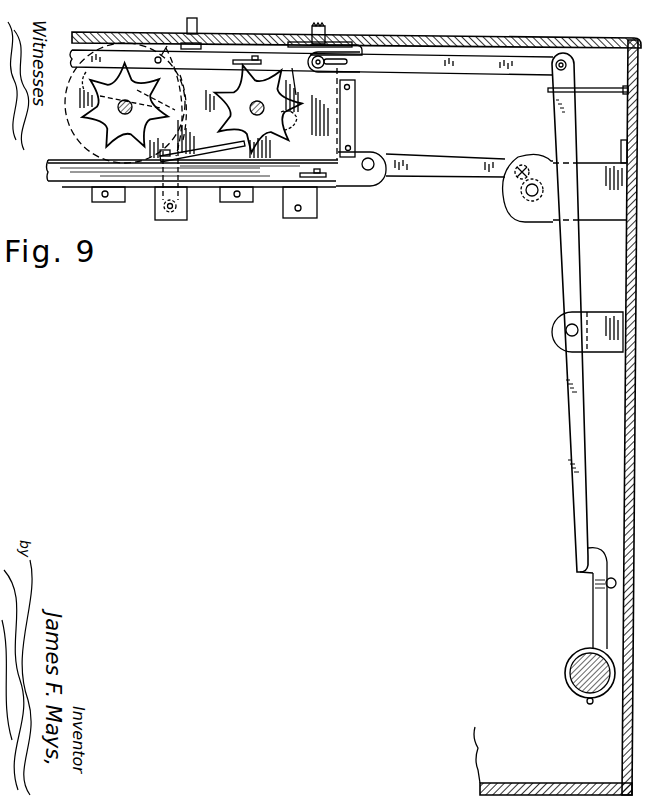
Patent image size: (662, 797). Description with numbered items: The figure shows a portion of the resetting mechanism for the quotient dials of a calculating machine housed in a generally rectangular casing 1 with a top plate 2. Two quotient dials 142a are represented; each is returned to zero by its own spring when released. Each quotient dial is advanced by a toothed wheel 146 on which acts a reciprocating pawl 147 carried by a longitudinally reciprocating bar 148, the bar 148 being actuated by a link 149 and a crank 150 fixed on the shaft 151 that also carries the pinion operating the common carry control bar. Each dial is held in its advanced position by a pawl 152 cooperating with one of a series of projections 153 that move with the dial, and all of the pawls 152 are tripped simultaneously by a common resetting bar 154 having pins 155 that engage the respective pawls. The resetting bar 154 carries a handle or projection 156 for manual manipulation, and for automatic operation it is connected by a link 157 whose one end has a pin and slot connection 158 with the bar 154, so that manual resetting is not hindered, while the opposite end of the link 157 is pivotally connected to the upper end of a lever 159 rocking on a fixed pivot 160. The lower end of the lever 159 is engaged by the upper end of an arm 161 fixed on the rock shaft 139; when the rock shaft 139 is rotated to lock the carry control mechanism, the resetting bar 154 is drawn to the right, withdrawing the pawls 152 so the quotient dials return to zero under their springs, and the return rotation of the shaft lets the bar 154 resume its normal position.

The casing 1 is at (630, 735).
The top plate 2 is at (605, 48).
The rock shaft 139 is at (577, 668).
The quotient dial 142a is at (68, 138).
The toothed wheel 146 is at (302, 121).
The reciprocating pawl 147 is at (197, 152).
The longitudinally reciprocating bar 148 is at (150, 182).
The link 149 is at (438, 158).
The crank 150 is at (518, 182).
The shaft 151 is at (524, 197).
The pawl 152 is at (189, 102).
The projections 153 is at (79, 85).
The common resetting bar 154 is at (296, 72).
The pins 155 is at (166, 61).
The handle or projection 156 is at (389, 47).
The link 157 is at (444, 68).
The pin and slot connection 158 is at (318, 69).
The lever 159 is at (559, 291).
The fixed pivot 160 is at (568, 336).
The arm 161 is at (592, 556).